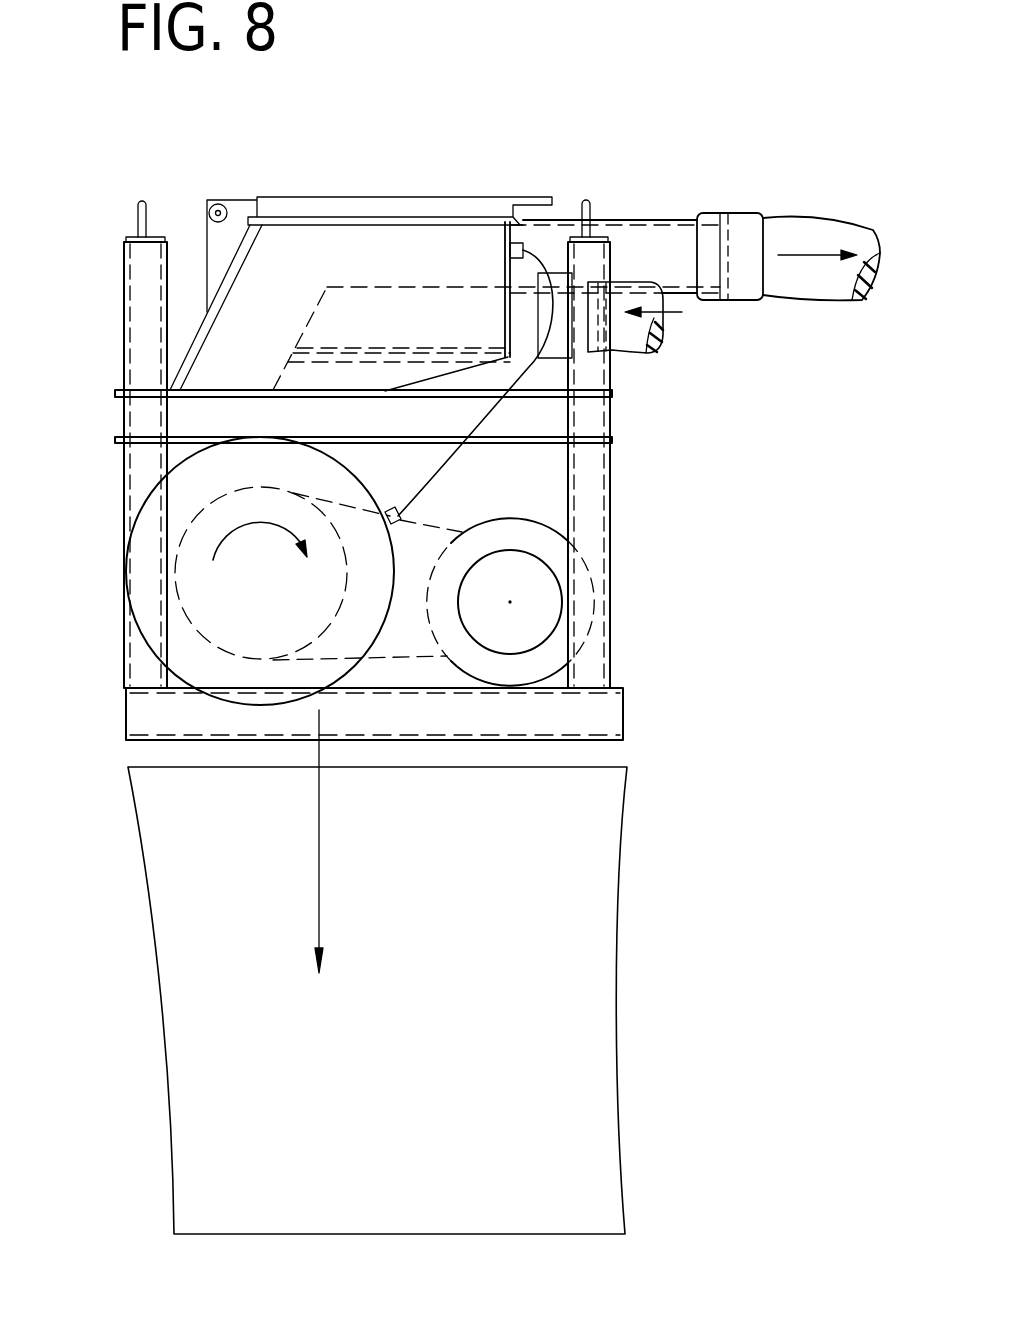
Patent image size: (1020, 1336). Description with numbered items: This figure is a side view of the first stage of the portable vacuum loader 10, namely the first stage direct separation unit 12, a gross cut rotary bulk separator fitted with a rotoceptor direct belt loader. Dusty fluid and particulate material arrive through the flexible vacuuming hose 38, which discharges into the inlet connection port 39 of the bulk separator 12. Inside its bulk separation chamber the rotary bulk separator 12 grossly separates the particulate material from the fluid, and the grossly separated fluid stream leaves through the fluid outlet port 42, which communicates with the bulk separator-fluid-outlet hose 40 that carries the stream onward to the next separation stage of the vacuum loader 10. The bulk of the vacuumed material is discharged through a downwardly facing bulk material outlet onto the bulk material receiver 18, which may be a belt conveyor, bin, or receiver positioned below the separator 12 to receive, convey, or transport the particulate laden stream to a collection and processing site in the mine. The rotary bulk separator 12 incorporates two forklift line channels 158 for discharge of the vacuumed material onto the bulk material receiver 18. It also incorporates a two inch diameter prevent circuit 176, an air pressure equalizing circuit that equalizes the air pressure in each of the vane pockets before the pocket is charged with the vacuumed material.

The portable vacuum loader 10 is at (630, 540).
The first stage direct separation unit 12 is at (195, 489).
The bulk material receiver 18 is at (619, 1000).
The flexible vacuuming hose 38 is at (632, 282).
The inlet connection port 39 is at (590, 327).
The bulk separator-fluid-outlet hose 40 is at (797, 218).
The fluid outlet port 42 is at (722, 213).
The forklift line channels 158 is at (623, 710).
The prevent circuit 176 is at (468, 455).